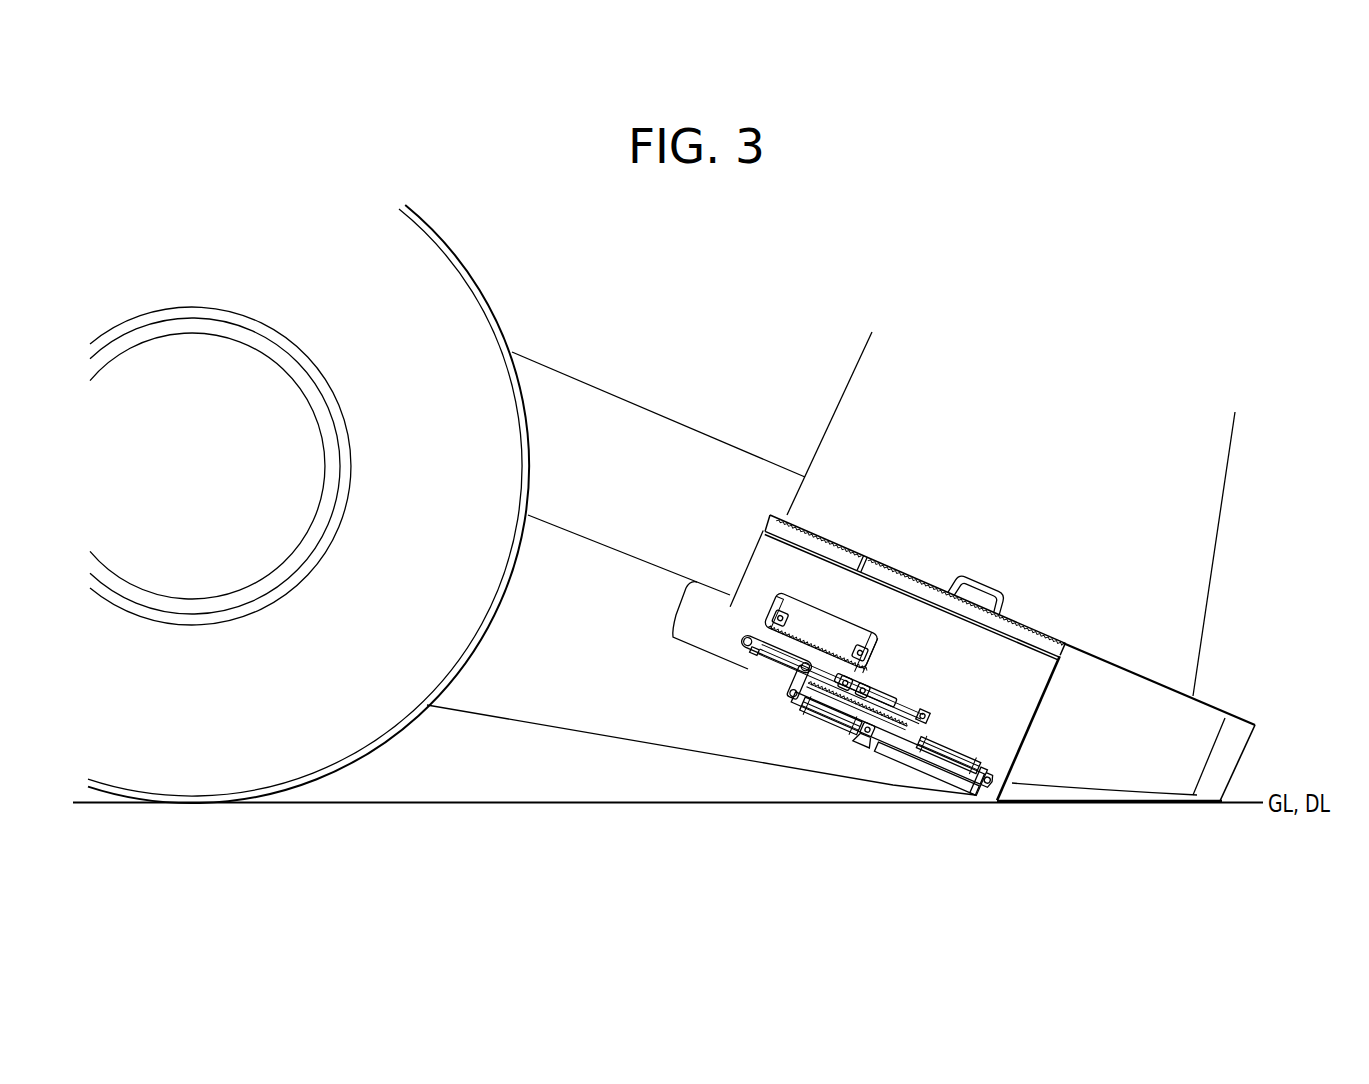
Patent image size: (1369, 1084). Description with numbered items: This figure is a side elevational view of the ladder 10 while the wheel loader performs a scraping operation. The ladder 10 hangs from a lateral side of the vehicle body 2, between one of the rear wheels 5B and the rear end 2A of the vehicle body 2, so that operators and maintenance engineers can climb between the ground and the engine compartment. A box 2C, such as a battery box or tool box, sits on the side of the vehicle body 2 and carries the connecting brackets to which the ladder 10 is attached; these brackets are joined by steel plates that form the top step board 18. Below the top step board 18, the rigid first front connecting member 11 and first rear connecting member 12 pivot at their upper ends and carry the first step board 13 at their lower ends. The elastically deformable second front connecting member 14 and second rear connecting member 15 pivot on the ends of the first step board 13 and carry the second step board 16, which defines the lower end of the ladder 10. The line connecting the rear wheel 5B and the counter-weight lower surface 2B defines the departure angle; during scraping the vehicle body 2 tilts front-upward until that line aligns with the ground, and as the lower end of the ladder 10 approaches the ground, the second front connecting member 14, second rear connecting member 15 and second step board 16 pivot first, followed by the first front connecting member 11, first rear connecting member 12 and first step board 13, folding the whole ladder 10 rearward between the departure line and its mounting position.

The vehicle body 2 is at (655, 550).
The rear end 2A is at (1118, 803).
The counter-weight lower surface 2B is at (1242, 760).
The box 2C is at (1003, 652).
The rear wheel 5B is at (343, 738).
The ladder 10 is at (907, 673).
The first front connecting member 11 is at (780, 657).
The first rear connecting member 12 is at (900, 702).
The first step board 13 is at (883, 700).
The second front connecting member 14 is at (833, 720).
The second rear connecting member 15 is at (947, 742).
The second step board 16 is at (907, 767).
The top step board 18 is at (812, 637).